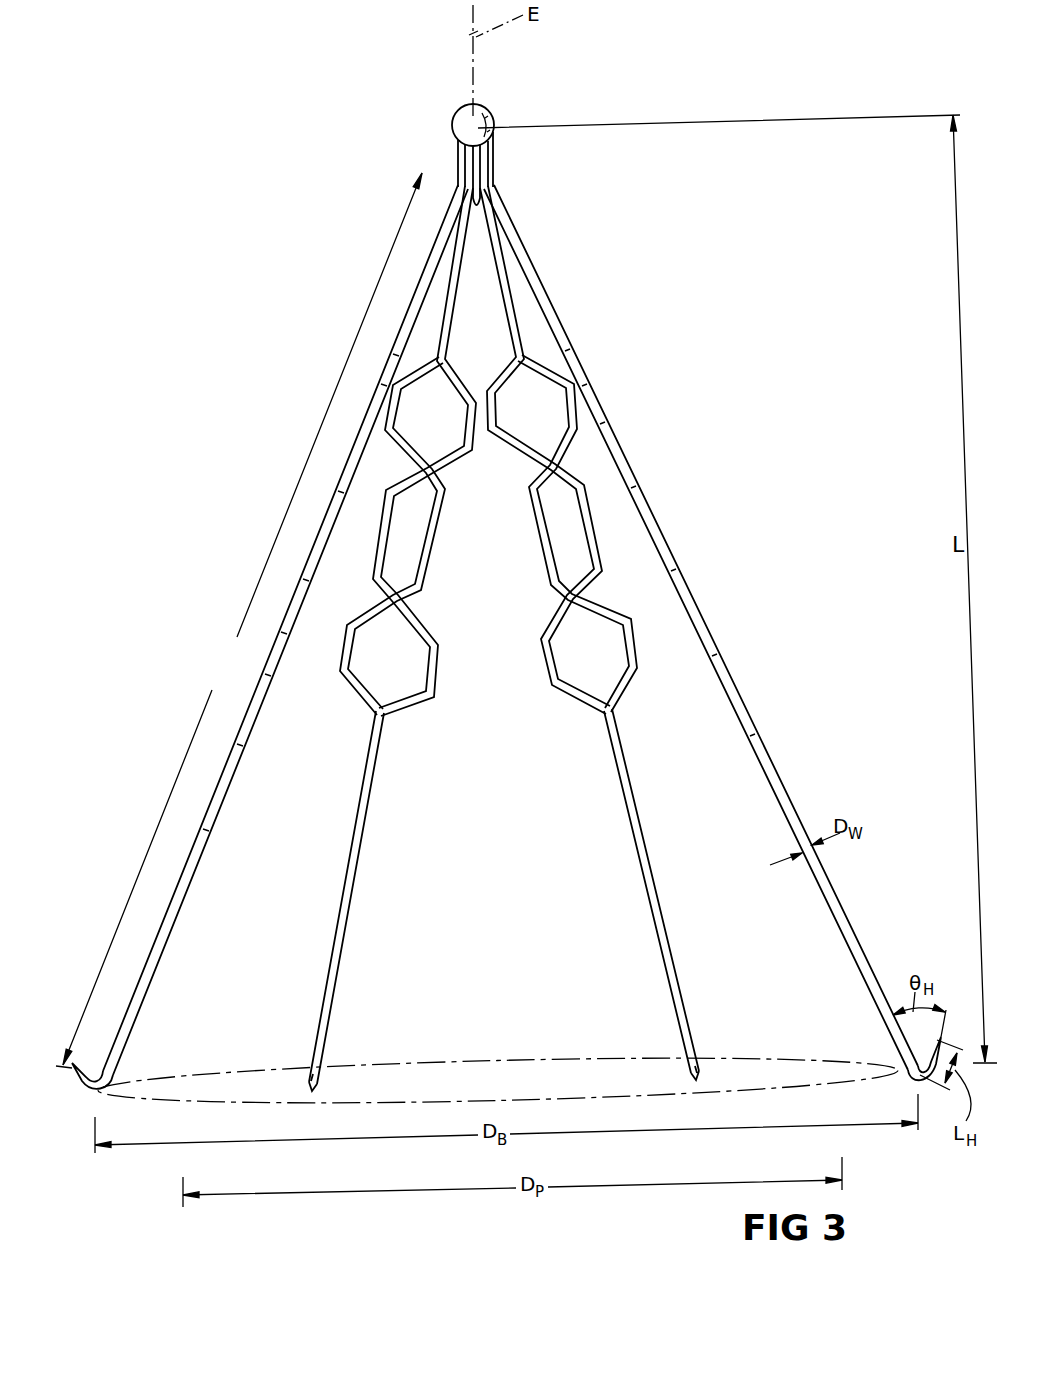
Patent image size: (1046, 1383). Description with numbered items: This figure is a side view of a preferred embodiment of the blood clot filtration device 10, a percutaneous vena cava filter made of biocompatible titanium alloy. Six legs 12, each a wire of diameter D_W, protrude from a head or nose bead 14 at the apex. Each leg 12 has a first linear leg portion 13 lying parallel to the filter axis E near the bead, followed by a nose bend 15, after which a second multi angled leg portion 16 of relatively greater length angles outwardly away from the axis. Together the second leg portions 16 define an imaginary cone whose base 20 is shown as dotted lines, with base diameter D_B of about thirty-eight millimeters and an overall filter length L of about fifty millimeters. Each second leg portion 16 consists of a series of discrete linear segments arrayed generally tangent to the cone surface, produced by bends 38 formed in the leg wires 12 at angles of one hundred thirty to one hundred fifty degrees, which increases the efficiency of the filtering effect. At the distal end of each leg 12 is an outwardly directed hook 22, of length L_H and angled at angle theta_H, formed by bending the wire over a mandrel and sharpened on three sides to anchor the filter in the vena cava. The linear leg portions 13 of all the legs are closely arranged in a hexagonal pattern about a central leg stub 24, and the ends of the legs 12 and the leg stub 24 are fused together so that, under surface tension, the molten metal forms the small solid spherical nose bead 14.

The blood clot filtration device 10 is at (506, 612).
The leg 12 is at (510, 634).
The first linear leg portion 13 is at (458, 163).
The nose bead 14 is at (453, 115).
The nose bend 15 is at (458, 181).
The second multi angled leg portion 16 is at (239, 620).
The base 20 is at (560, 1062).
The hook 22 is at (90, 1095).
The central leg stub 24 is at (476, 208).
The bends 38 is at (473, 403).